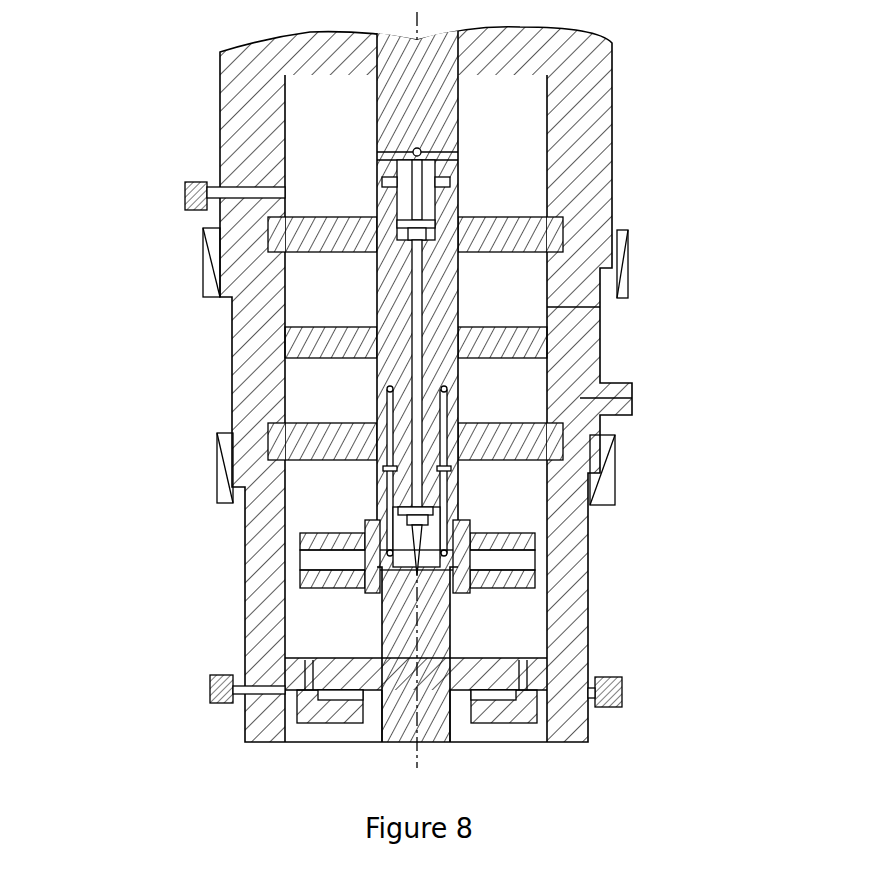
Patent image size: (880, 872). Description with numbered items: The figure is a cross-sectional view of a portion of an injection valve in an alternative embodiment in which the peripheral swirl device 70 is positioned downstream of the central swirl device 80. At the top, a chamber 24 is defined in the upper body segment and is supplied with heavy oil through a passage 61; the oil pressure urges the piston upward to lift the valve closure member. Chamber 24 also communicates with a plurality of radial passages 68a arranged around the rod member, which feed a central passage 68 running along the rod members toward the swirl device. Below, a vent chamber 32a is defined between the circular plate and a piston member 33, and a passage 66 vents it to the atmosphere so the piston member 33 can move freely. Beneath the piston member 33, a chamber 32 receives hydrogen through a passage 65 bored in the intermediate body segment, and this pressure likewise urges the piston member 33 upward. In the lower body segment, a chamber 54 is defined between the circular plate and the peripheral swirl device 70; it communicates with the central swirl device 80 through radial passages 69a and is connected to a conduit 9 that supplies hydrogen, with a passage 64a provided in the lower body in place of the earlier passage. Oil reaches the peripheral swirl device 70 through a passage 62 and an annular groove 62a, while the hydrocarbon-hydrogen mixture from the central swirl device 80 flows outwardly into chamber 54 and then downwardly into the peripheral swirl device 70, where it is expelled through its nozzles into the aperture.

The chamber 24 is at (340, 145).
The passage 61 is at (287, 195).
The radial passages 68a is at (375, 160).
The vent chamber 32a is at (342, 293).
The piston member 33 is at (345, 343).
The radial passages 69a is at (378, 403).
The chamber 54 is at (337, 503).
The central passage 68 is at (428, 245).
The passage 66 is at (577, 313).
The chamber 32 is at (502, 402).
The passage 65 is at (585, 398).
The central swirl device 80 is at (528, 520).
The peripheral swirl device 70 is at (498, 640).
The annular groove 62a is at (588, 652).
The passage 64a is at (585, 697).
The passage 62 is at (243, 703).
The conduit 9 is at (210, 690).